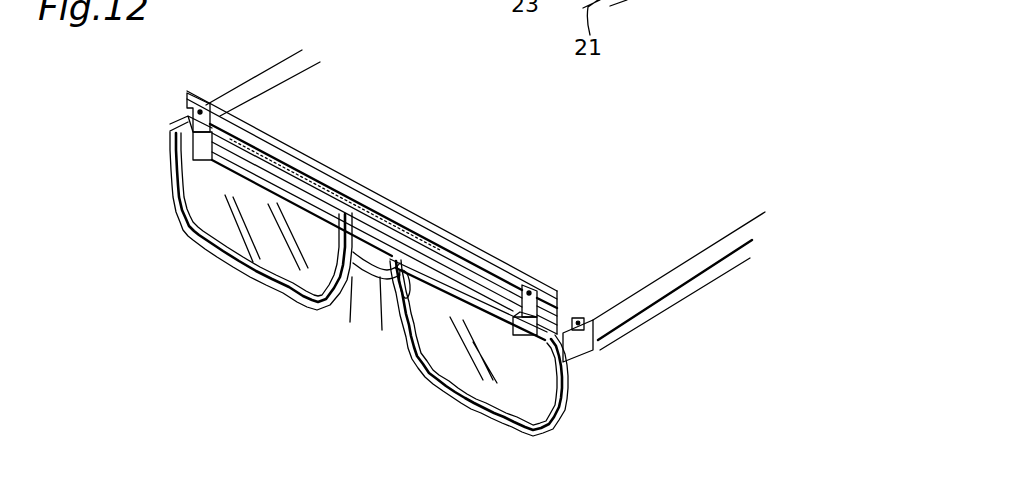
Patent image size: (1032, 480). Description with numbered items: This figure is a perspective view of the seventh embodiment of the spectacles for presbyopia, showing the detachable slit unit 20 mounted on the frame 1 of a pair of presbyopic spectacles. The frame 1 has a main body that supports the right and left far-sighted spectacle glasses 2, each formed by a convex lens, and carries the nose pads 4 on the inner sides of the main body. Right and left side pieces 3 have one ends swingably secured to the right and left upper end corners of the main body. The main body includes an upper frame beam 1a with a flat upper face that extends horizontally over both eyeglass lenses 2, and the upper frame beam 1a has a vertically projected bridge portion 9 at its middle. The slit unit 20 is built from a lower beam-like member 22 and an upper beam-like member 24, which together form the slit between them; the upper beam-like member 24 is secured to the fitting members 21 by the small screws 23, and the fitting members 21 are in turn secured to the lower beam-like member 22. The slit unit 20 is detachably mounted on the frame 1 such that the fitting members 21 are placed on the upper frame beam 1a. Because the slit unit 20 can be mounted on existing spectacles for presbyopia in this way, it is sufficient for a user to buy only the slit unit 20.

The frame 1 is at (192, 240).
The upper frame beam 1a is at (473, 292).
The far-sighted spectacle glasses 2 is at (277, 267).
The side pieces 3 is at (607, 313).
The nose pads 4 is at (353, 283).
The vertically projected bridge portion 9 is at (380, 280).
The slit unit 20 is at (372, 212).
The fitting members 21 is at (193, 150).
The lower beam-like member 22 is at (372, 230).
The small screws 23 is at (200, 108).
The upper beam-like member 24 is at (302, 157).